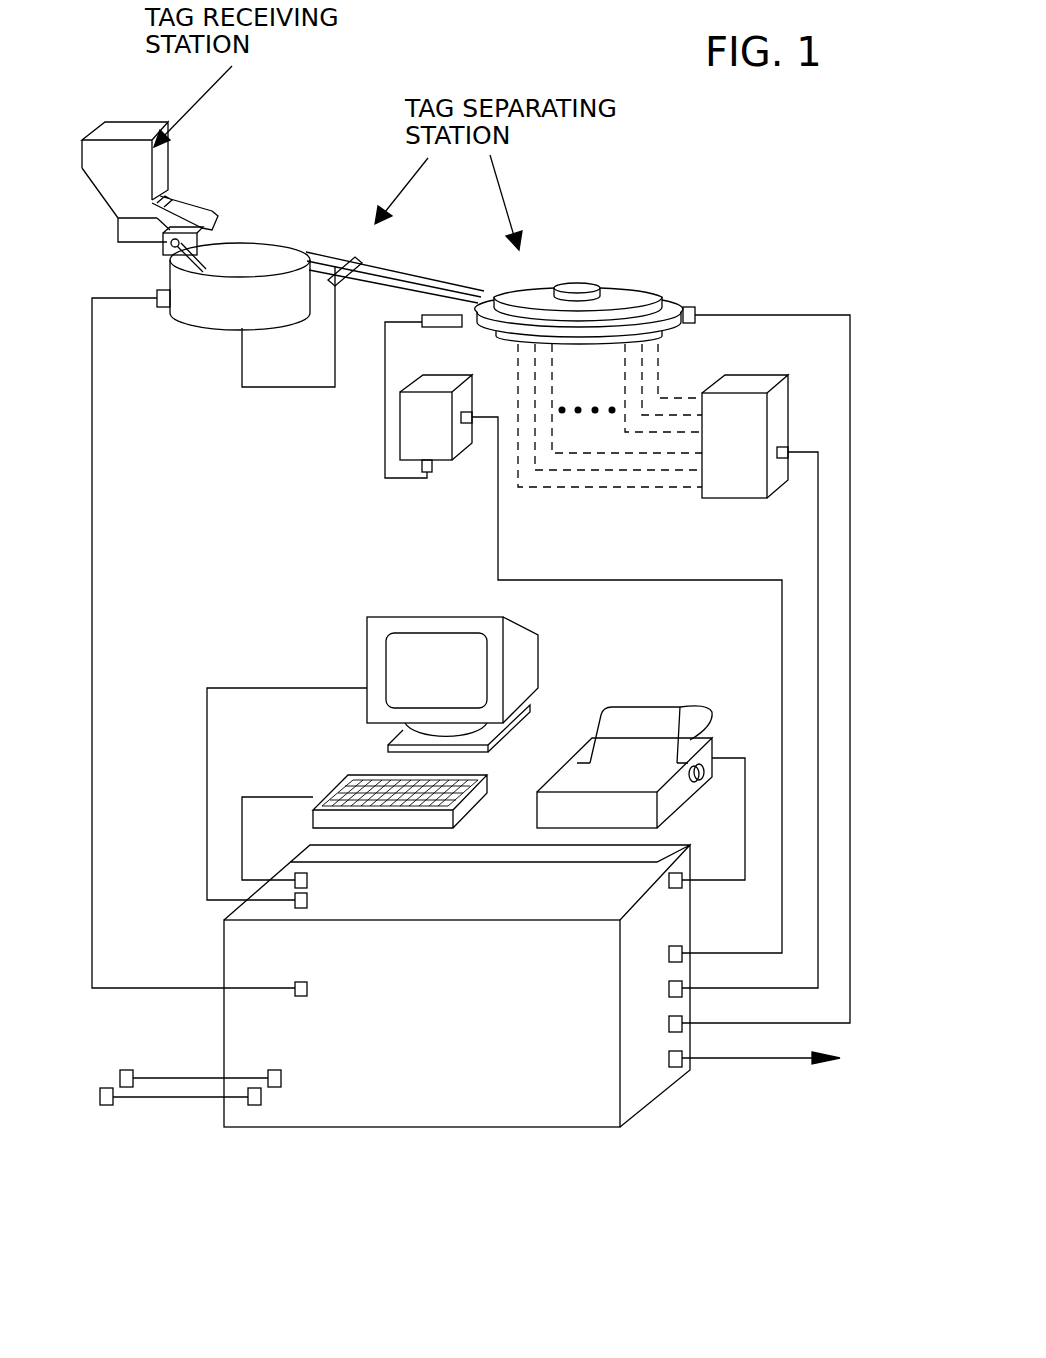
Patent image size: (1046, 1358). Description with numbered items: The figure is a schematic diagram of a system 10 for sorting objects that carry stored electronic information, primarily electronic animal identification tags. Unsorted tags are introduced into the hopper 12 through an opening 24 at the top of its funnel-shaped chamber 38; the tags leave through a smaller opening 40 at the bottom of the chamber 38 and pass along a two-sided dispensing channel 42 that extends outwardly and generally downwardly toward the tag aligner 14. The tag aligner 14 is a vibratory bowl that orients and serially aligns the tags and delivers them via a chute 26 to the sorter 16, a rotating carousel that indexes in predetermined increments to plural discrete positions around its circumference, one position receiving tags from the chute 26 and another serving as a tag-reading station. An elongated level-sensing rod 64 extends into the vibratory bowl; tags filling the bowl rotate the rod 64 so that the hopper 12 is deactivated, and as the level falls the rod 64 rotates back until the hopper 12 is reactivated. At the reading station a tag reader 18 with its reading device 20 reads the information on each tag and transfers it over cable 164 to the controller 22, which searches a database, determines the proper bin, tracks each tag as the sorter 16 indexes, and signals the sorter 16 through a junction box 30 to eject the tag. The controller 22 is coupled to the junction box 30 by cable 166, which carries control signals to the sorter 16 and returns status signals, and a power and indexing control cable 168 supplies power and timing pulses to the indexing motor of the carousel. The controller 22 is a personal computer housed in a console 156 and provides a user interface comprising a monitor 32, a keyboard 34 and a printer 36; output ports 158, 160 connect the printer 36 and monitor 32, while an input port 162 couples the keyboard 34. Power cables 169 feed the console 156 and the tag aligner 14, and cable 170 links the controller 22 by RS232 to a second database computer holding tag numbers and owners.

The system 10 is at (598, 192).
The hopper 12 is at (165, 160).
The tag aligner 14 is at (275, 255).
The sorter 16 is at (628, 287).
The tag reader 18 is at (438, 443).
The reading device 20 is at (455, 328).
The controller 22 is at (470, 1168).
The opening 24 is at (113, 122).
The chute 26 is at (422, 277).
The junction box 30 is at (745, 380).
The monitor 32 is at (515, 662).
The keyboard 34 is at (338, 780).
The printer 36 is at (710, 737).
The funnel-shaped chamber 38 is at (105, 160).
The smaller opening 40 is at (165, 195).
The dispensing channel 42 is at (198, 210).
The level-sensing rod 64 is at (165, 268).
The console 156 is at (328, 1105).
The output port 158 is at (308, 900).
The output port 160 is at (680, 890).
The input port 162 is at (308, 880).
The cable 164 is at (598, 580).
The cable 166 is at (818, 516).
The power and indexing control cable 168 is at (850, 742).
The power cables 169 is at (184, 1072).
The cable 170 is at (735, 1060).